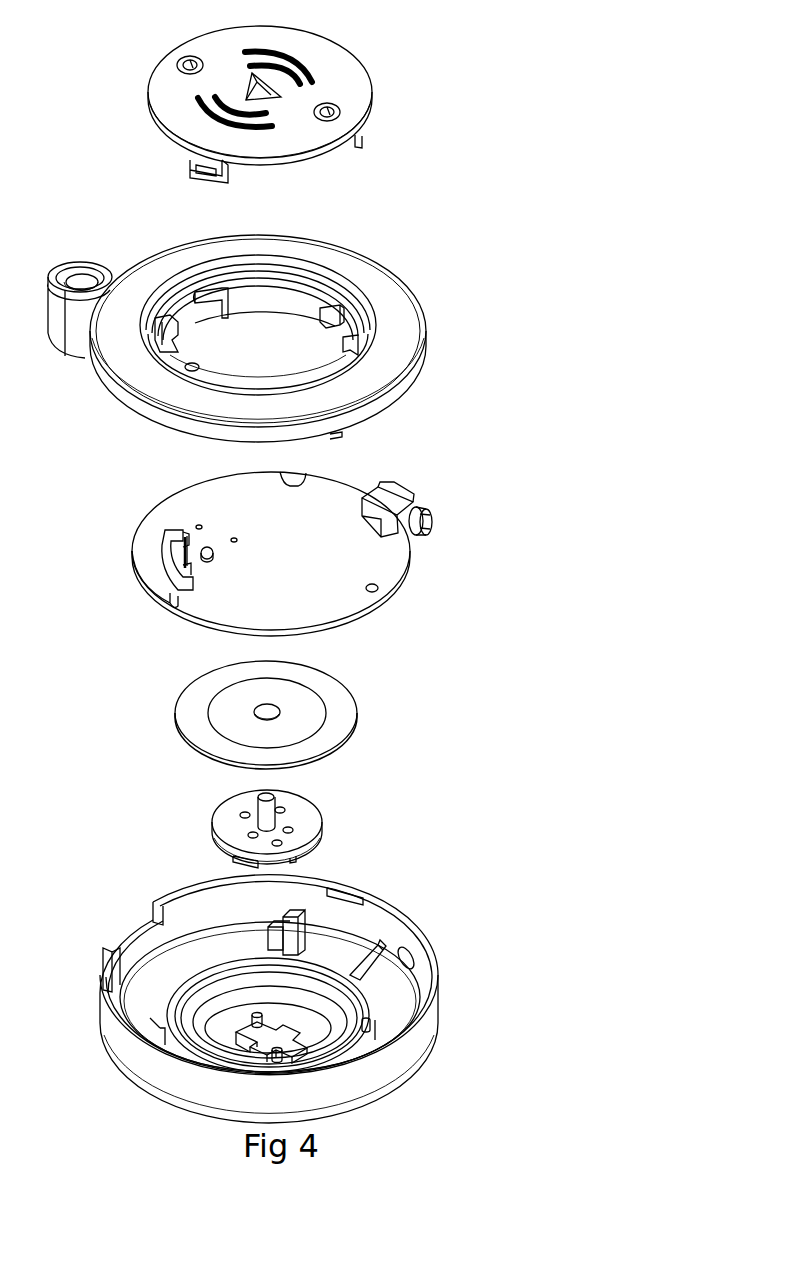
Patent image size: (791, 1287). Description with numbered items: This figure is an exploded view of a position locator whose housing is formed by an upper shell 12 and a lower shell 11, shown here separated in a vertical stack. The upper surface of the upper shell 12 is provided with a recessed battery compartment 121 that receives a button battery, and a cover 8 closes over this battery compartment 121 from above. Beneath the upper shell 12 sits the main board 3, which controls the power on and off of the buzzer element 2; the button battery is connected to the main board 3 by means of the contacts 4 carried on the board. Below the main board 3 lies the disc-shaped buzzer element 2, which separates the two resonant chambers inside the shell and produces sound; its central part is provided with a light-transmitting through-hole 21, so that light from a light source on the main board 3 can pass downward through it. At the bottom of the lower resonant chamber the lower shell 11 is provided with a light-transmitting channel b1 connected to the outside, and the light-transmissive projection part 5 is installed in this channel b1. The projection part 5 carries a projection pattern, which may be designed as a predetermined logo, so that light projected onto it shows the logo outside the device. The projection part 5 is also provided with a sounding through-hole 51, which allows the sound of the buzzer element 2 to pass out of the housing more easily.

The cover 8 is at (328, 63).
The upper shell 12 is at (187, 252).
The battery compartment 121 is at (300, 357).
The main board 3 is at (357, 558).
The contacts 4 is at (170, 532).
The buzzer element 2 is at (350, 715).
The transmitting through-hole 21 is at (263, 713).
The projection parts 5 is at (305, 822).
The acoustic through-hole 51 is at (240, 813).
The lower shell 11 is at (120, 1043).
The transmitting channel b1 is at (278, 1043).